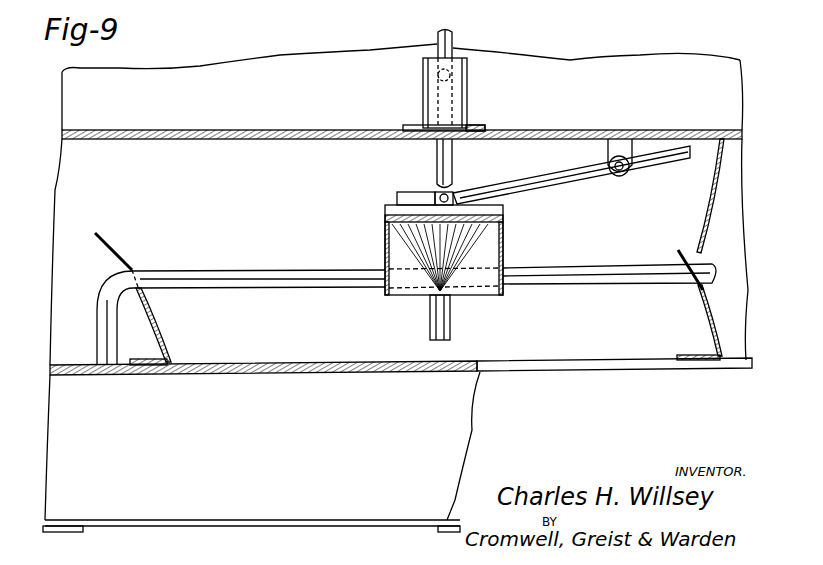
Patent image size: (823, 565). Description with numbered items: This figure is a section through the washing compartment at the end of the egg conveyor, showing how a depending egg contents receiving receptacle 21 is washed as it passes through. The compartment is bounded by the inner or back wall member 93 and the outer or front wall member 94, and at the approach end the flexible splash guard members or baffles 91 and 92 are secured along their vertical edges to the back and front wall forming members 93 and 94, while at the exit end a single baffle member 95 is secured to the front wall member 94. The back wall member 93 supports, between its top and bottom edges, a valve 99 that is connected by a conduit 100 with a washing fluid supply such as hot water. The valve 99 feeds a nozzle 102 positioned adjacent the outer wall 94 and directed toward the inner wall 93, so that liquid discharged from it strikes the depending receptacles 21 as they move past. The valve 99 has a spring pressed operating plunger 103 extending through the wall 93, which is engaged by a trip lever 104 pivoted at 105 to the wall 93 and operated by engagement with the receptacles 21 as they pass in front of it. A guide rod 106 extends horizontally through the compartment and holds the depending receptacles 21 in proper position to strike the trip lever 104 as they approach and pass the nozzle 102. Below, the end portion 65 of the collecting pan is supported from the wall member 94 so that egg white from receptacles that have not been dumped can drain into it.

The egg contents receiving receptacle 21 is at (503, 240).
The end portion of collecting pan 65 is at (182, 512).
The splash guard member 91 is at (703, 217).
The splash guard member 92 is at (703, 297).
The back wall member 93 is at (677, 130).
The front wall member 94 is at (640, 360).
The baffle member 95 is at (110, 243).
The valve 99 is at (457, 62).
The conduit 100 is at (438, 32).
The nozzle 102 is at (450, 318).
The operating plunger 103 is at (452, 160).
The trip lever 104 is at (562, 176).
The pivot 105 is at (617, 172).
The guide rod 106 is at (287, 272).